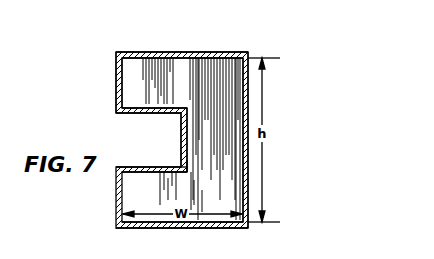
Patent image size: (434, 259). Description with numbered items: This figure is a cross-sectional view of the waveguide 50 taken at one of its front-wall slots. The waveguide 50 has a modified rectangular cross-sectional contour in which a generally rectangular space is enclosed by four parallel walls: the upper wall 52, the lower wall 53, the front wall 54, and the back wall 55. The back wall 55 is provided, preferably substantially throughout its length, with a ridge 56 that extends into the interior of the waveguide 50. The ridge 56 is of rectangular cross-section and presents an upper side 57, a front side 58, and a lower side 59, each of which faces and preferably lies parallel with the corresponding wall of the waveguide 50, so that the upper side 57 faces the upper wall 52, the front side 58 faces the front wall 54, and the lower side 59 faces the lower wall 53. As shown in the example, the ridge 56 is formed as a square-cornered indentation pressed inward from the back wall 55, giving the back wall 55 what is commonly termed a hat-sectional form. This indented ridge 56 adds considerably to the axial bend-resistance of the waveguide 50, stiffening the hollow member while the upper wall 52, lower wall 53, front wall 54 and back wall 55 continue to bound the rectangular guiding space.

The waveguide 50 is at (154, 44).
The upper wall 52 is at (207, 52).
The lower wall 53 is at (209, 228).
The front wall 54 is at (243, 198).
The back wall 55 is at (116, 81).
The ridge 56 is at (188, 167).
The upper side 57 is at (162, 108).
The front side 58 is at (181, 127).
The lower side 59 is at (180, 165).